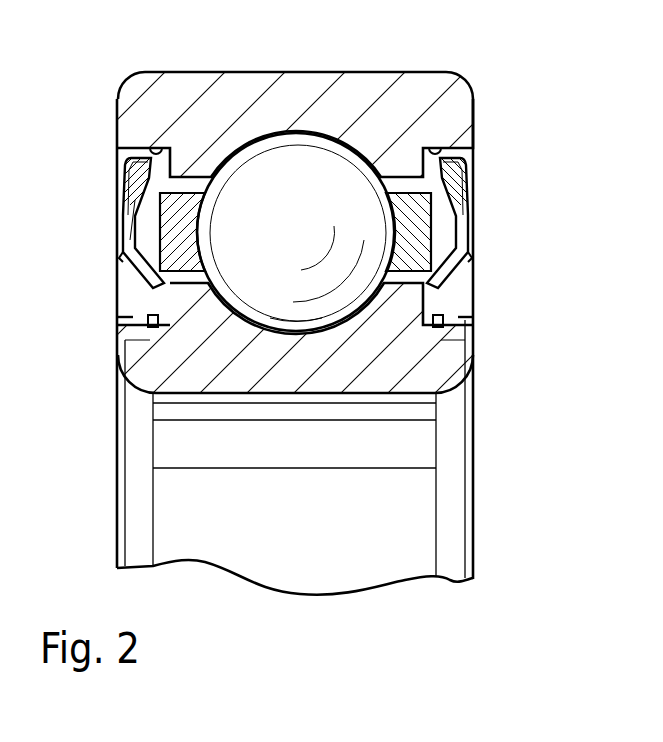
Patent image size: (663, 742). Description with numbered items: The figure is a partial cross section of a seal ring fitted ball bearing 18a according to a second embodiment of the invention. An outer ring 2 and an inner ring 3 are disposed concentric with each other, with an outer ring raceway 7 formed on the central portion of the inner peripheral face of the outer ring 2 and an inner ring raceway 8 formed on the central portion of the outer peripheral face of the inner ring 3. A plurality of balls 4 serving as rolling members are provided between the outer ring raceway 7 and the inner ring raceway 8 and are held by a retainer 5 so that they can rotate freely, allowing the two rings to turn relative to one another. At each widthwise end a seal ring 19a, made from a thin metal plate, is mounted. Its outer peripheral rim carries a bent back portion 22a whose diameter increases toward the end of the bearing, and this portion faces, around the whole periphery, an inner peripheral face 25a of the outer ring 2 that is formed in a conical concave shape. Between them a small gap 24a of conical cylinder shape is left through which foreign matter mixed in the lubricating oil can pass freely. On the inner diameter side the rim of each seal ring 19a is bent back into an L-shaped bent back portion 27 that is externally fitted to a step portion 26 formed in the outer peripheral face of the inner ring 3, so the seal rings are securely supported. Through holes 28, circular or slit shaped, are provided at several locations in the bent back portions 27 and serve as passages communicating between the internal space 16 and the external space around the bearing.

The outer ring 2 is at (466, 106).
The inner ring 3 is at (460, 396).
The balls 4 is at (257, 165).
The retainer 5 is at (160, 208).
The outer ring raceway 7 is at (333, 142).
The inner ring raceway 8 is at (297, 324).
The space 16 is at (135, 240).
The seal ring fitted ball bearing 18a is at (298, 215).
The seal rings 19a is at (128, 258).
The bent back portions 22a is at (125, 160).
The small gap 24a is at (120, 148).
The inner peripheral faces 25a is at (155, 143).
The step portions 26 is at (140, 360).
The bent back portions on the inner diameter side 27 is at (158, 330).
The through holes 28 is at (150, 316).